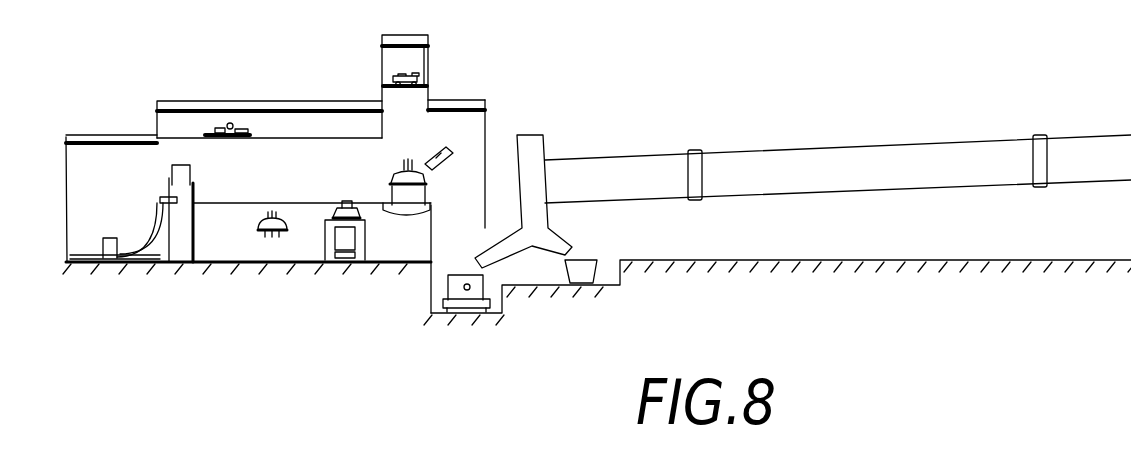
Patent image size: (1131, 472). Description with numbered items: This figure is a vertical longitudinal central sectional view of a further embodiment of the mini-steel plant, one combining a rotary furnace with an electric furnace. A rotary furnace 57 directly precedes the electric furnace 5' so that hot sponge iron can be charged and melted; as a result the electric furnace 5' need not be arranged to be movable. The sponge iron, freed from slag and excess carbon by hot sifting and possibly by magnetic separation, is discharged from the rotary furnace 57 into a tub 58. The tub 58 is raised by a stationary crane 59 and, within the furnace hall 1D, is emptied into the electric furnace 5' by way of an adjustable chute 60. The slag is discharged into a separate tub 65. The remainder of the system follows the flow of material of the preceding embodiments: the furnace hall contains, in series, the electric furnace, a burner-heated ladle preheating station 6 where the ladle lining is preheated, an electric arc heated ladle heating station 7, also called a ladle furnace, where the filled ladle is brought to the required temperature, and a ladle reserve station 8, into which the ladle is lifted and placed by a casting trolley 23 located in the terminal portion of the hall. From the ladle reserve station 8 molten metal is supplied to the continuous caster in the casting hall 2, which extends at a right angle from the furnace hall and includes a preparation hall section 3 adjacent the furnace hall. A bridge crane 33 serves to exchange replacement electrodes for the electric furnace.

The furnace hall 1D is at (279, 100).
The casting hall 2 is at (94, 133).
The casting trolley 23 is at (213, 128).
The bridge crane 33 is at (388, 76).
The stationary crane 59 is at (467, 110).
The preparation hall section 3 is at (468, 164).
The adjustable chute 60 is at (455, 150).
The ladle reserve station 8 is at (190, 174).
The ladle heating station 7 is at (257, 236).
The ladle preheating station 6 is at (333, 231).
The electric furnace 5' is at (401, 251).
The tub 58 is at (463, 309).
The tub 65 is at (583, 284).
The rotary furnace 57 is at (813, 162).